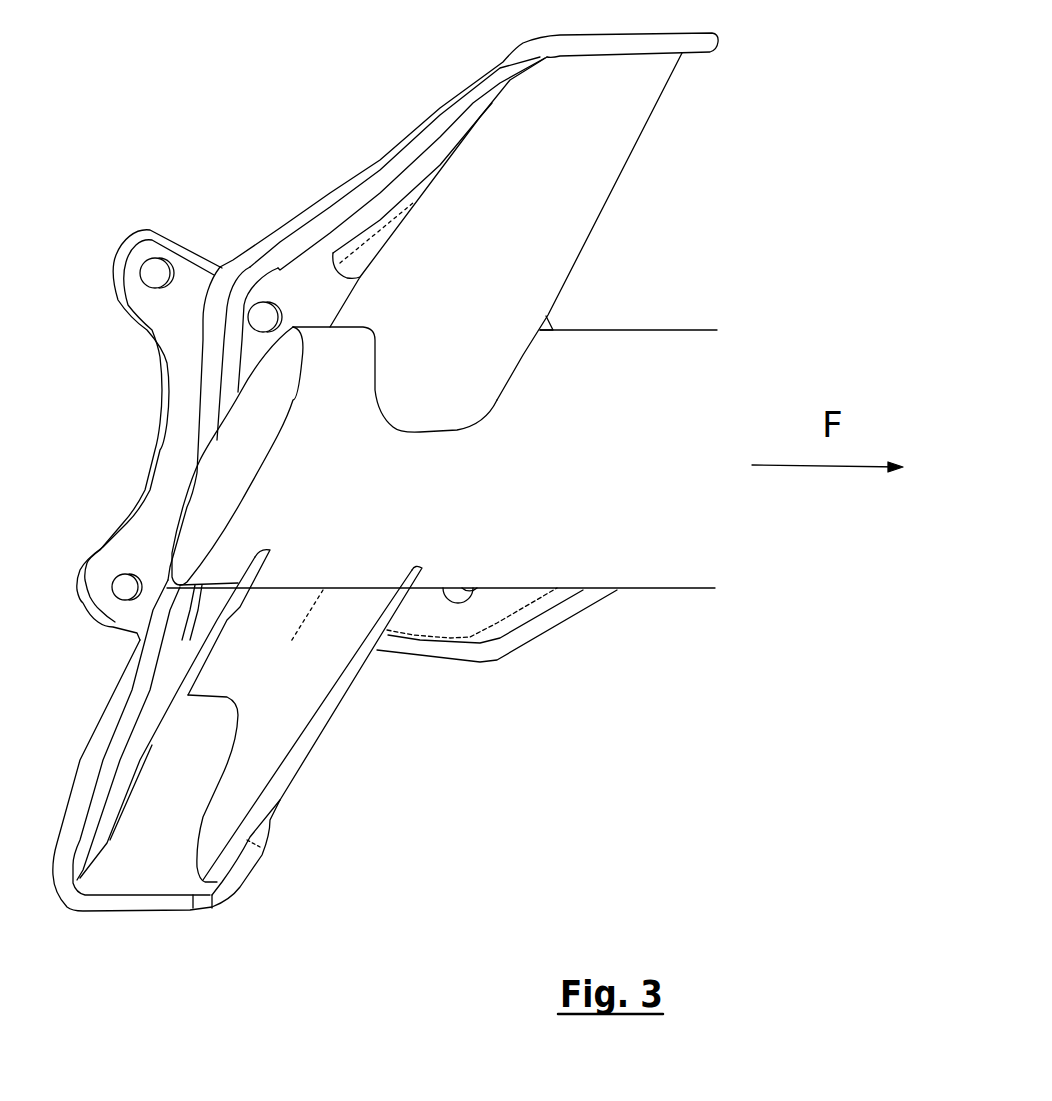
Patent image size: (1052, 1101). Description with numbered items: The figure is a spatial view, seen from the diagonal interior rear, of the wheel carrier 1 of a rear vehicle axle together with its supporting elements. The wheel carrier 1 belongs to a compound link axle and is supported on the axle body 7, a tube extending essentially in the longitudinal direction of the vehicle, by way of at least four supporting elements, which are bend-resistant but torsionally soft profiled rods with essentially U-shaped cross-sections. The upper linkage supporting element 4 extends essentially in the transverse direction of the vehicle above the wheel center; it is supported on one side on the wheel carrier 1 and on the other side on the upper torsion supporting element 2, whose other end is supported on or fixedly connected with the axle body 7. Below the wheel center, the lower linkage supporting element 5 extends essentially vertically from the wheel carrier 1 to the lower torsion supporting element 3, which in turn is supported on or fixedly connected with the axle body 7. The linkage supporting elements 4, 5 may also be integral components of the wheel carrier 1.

The wheel carrier 1 is at (223, 280).
The upper torsion supporting element 2 is at (570, 198).
The lower torsion supporting element 3 is at (292, 683).
The upper linkage supporting element 4 is at (405, 148).
The lower linkage supporting element 5 is at (147, 827).
The axle body 7 is at (578, 477).